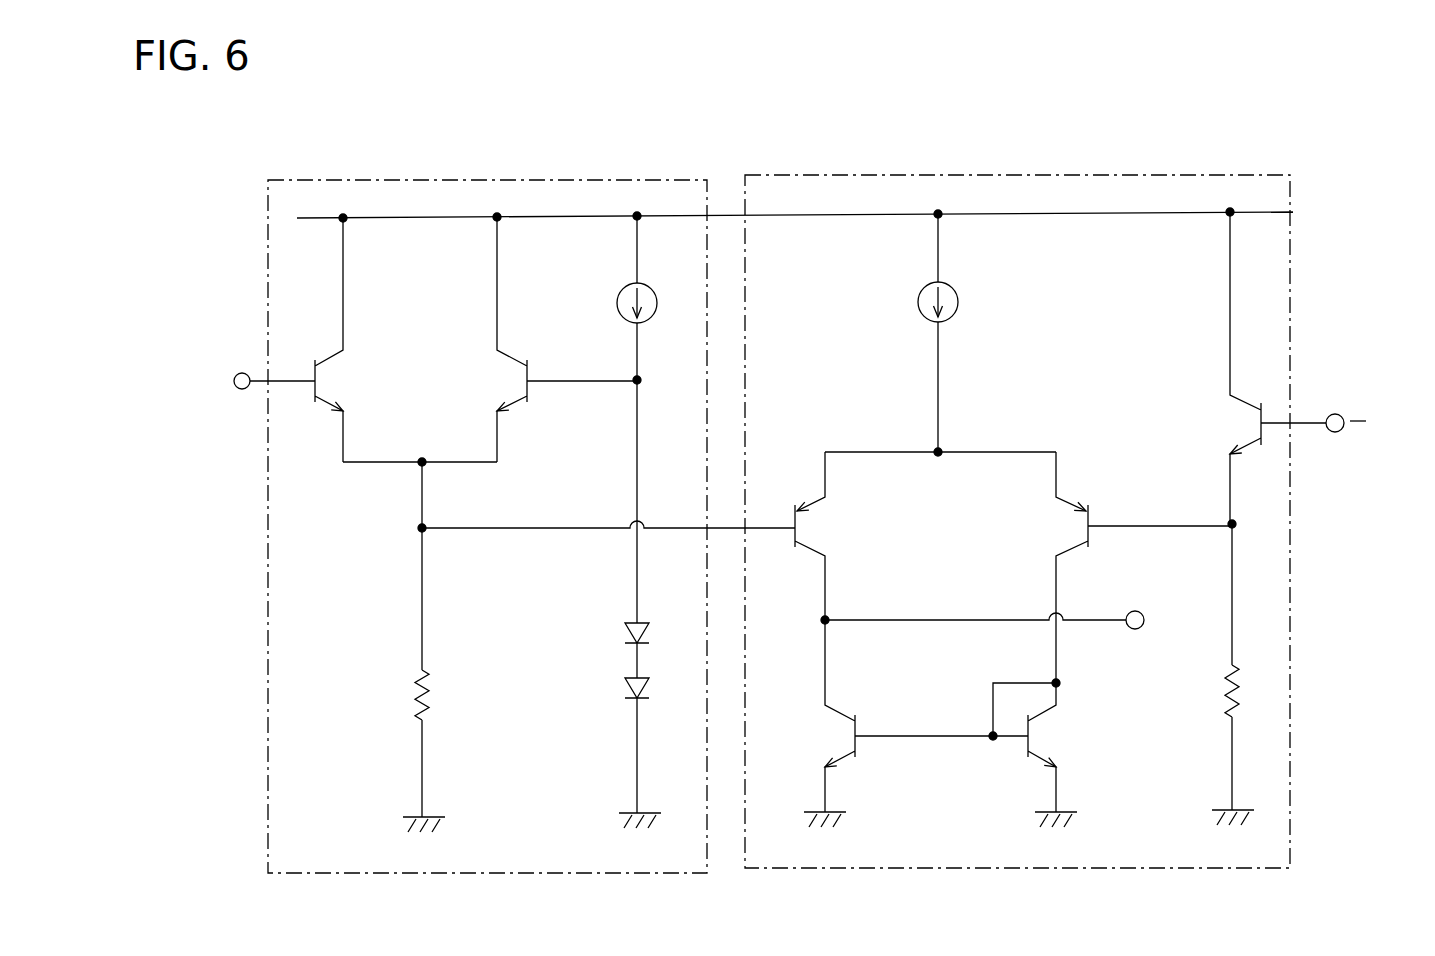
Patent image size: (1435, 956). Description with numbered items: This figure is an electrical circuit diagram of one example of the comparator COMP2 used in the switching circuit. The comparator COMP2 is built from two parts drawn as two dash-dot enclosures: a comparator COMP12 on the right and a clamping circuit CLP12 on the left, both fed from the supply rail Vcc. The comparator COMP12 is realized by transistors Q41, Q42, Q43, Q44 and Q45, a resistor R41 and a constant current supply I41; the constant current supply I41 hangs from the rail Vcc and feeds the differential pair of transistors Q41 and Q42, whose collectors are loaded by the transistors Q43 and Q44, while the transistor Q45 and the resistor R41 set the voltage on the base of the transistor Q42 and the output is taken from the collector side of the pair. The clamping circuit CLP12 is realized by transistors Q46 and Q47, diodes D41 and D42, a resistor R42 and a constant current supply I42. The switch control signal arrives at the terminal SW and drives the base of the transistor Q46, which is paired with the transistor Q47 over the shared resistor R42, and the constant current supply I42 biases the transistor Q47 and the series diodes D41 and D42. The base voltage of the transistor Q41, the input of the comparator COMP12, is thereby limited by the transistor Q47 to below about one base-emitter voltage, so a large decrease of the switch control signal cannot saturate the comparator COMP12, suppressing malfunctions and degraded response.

The comparator COMP2 is at (242, 208).
The clamping circuit CLP12 is at (481, 178).
The comparator COMP12 is at (1008, 175).
The supply voltage Vcc is at (822, 212).
The switch control signal input SW is at (251, 382).
The transistor Q46 is at (318, 385).
The transistor Q47 is at (525, 384).
The constant current supply I42 is at (617, 303).
The diode D41 is at (625, 634).
The diode D42 is at (625, 689).
The resistor R42 is at (414, 696).
The constant current supply I41 is at (959, 302).
The transistor Q41 is at (798, 531).
The transistor Q42 is at (1086, 529).
The transistor Q43 is at (853, 740).
The transistor Q44 is at (1030, 742).
The transistor Q45 is at (1259, 428).
The resistor R41 is at (1226, 693).